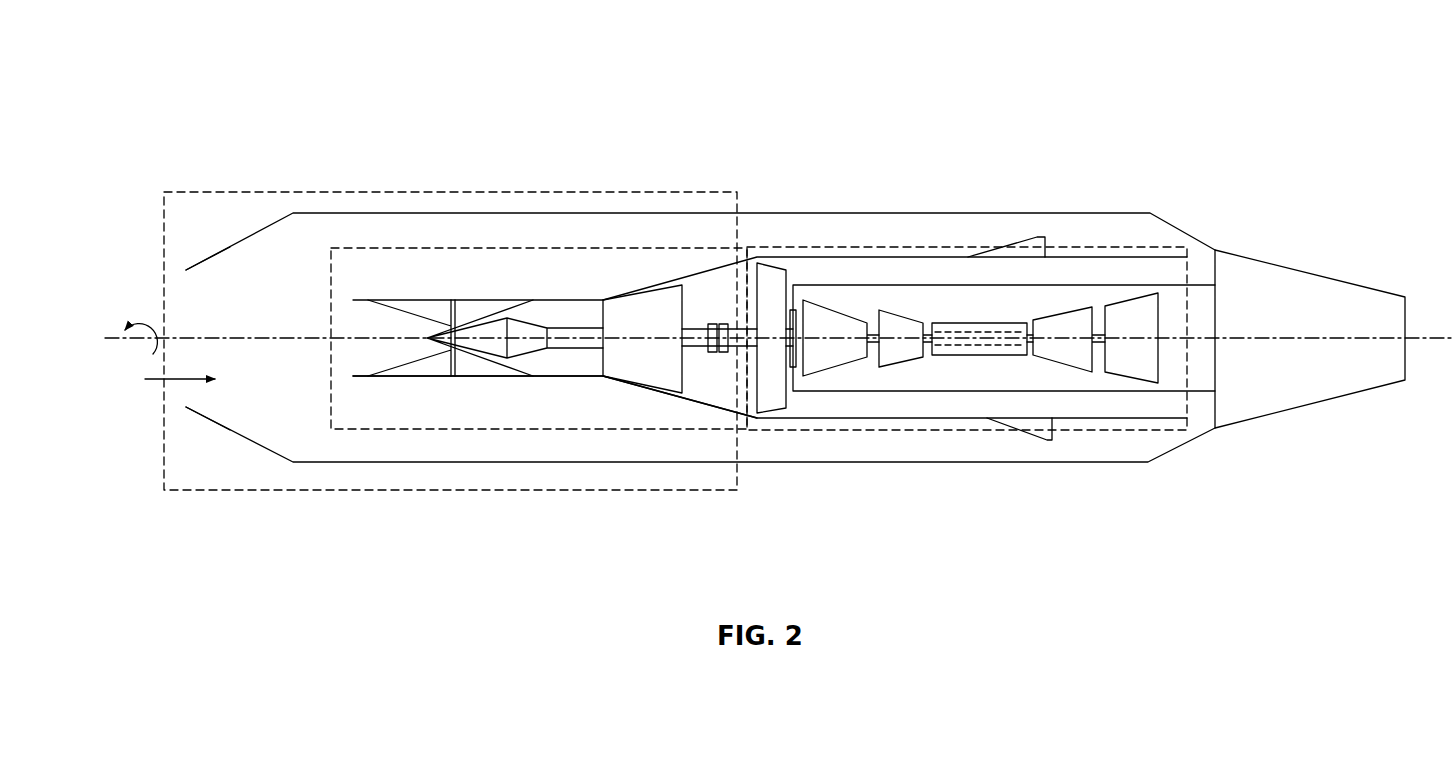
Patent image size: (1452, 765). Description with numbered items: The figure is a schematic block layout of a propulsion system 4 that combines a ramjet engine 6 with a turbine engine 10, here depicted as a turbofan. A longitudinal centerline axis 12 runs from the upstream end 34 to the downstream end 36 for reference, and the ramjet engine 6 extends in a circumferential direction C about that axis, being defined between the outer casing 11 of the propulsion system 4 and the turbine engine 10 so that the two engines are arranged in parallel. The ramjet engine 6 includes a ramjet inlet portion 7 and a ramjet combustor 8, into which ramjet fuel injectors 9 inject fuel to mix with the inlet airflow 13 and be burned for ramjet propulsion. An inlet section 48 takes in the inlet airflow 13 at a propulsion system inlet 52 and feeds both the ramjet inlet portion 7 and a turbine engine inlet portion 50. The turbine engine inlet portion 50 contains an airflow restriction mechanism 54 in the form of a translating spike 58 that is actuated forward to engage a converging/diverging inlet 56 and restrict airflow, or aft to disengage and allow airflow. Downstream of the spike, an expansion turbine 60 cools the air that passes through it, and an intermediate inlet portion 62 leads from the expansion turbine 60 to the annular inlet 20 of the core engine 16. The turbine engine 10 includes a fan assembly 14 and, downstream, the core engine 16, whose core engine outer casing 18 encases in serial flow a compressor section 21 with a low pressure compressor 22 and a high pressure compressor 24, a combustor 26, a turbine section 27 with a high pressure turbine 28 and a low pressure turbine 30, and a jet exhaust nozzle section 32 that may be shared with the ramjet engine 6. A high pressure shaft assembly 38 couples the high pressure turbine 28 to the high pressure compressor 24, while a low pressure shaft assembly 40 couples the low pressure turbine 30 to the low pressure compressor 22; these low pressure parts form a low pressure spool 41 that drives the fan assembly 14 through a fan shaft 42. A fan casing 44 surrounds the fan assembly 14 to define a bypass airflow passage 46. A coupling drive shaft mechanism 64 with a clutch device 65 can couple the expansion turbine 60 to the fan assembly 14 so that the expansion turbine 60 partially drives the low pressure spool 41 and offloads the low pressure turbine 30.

The propulsion system 4 is at (1268, 85).
The ramjet engine 6 is at (948, 237).
The ramjet inlet portion 7 is at (544, 236).
The ramjet combustor 8 is at (1092, 231).
The ramjet fuel injectors 9 is at (1037, 237).
The turbine engine 10 is at (1162, 266).
The outer casing 11 is at (562, 462).
The longitudinal centerline axis 12 is at (130, 342).
The inlet airflow 13 is at (180, 381).
The fan assembly 14 is at (762, 391).
The core engine 16 is at (890, 396).
The core engine outer casing 18 is at (852, 284).
The annular inlet 20 is at (781, 287).
The compressor section 21 is at (871, 308).
The low pressure compressor 22 is at (828, 357).
The high pressure compressor 24 is at (905, 354).
The combustor 26 is at (990, 356).
The turbine section 27 is at (1098, 298).
The high pressure turbine 28 is at (1066, 352).
The low pressure turbine 30 is at (1127, 357).
The jet exhaust nozzle section 32 is at (1325, 399).
The upstream end 34 is at (109, 304).
The downstream end 36 is at (1451, 370).
The high pressure shaft assembly 38 is at (972, 330).
The low pressure shaft assembly 40 is at (887, 330).
The low pressure spool 41 is at (814, 296).
The fan shaft 42 is at (792, 367).
The fan casing 44 is at (968, 257).
The bypass airflow passage 46 is at (1165, 274).
The inlet section 48 is at (436, 192).
The turbine engine inlet portion 50 is at (478, 247).
The propulsion system inlet 52 is at (186, 281).
The airflow restriction mechanism 54 is at (483, 386).
The converging/diverging inlet 56 is at (435, 366).
The translating spike 58 is at (497, 349).
The expansion turbine 60 is at (645, 312).
The intermediate inlet portion 62 is at (727, 419).
The coupling drive shaft mechanism 64 is at (723, 318).
The clutch device 65 is at (713, 359).
The circumferential direction C is at (155, 323).